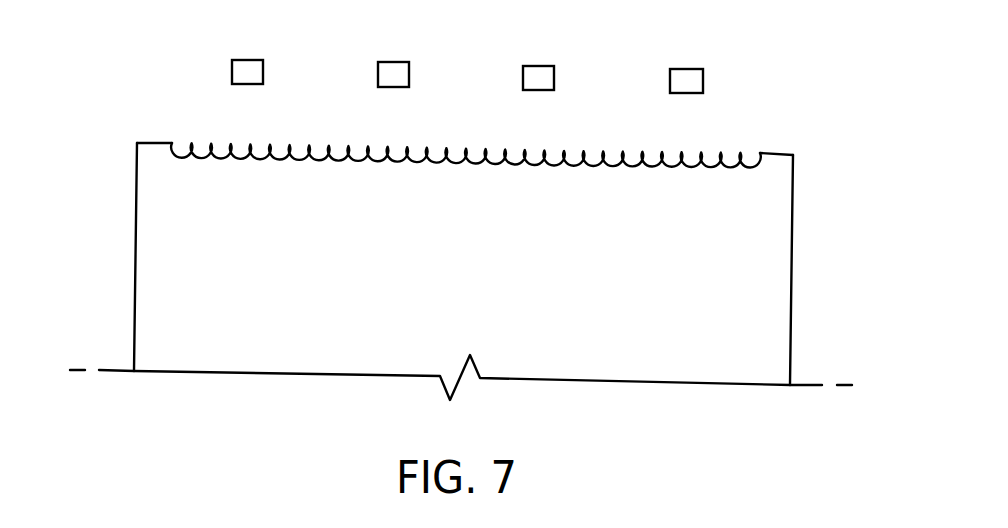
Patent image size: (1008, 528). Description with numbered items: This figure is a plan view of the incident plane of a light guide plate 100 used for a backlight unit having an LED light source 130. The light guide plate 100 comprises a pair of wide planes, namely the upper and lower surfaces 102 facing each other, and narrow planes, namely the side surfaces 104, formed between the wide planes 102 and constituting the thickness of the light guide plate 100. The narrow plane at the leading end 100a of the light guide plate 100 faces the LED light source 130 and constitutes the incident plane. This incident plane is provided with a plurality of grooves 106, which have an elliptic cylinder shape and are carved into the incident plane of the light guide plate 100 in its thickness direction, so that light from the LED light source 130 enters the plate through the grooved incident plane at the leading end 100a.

The light guide plate 100 is at (464, 235).
The leading end 100a is at (765, 140).
The upper and lower surfaces 102 is at (160, 275).
The side surfaces 104 is at (136, 213).
The grooves 106 is at (573, 157).
The LED light source 130 is at (541, 72).